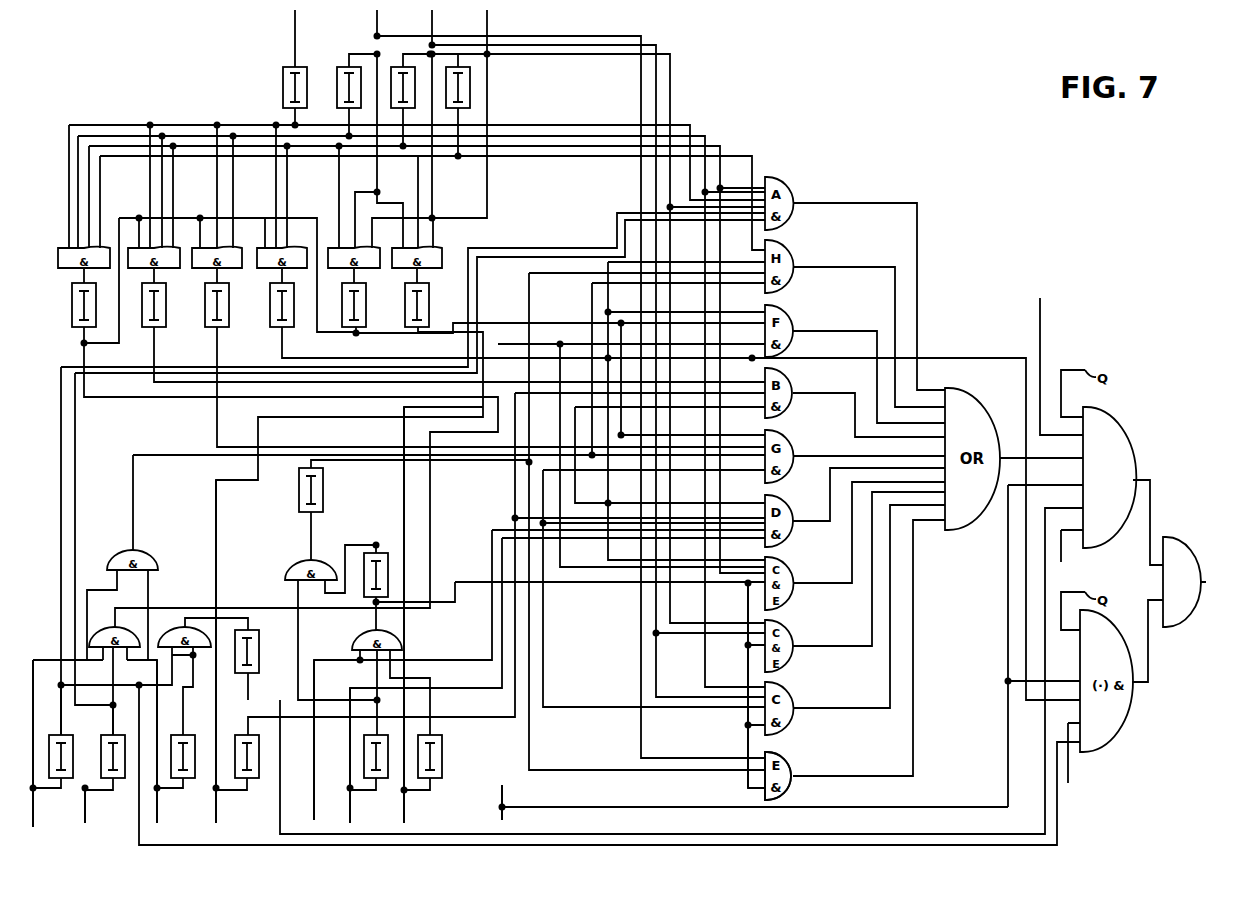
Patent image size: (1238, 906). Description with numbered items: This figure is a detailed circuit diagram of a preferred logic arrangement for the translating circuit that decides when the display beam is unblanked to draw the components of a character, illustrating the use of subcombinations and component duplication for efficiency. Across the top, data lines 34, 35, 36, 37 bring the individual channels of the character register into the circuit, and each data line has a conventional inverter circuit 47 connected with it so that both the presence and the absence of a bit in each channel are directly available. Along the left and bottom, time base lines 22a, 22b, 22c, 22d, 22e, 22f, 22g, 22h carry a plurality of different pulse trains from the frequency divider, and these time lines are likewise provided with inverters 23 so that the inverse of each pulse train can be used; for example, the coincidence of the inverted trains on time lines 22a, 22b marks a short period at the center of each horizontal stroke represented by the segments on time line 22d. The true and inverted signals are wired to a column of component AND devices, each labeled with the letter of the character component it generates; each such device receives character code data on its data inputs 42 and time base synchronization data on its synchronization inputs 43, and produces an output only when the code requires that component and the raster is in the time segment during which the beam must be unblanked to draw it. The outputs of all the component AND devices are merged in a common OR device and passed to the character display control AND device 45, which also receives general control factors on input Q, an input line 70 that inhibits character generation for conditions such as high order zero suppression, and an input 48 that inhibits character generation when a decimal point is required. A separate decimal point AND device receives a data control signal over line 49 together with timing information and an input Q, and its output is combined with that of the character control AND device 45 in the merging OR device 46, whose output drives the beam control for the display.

The time base line 22a is at (50, 748).
The time base line 22b is at (103, 812).
The time base line 22c is at (173, 748).
The time base line 22d is at (234, 658).
The time base line 22e is at (330, 746).
The time base line 22f is at (366, 760).
The time base line 22g is at (422, 620).
The time base line 22h is at (755, 801).
The inverter 23 is at (70, 716).
The data line 34 is at (487, 40).
The data line 35 is at (432, 30).
The data line 36 is at (377, 36).
The data line 37 is at (295, 40).
The data input 42 is at (560, 147).
The synchronization input 43 is at (555, 256).
The character display control AND device 45 is at (1116, 416).
The merging OR device 46 is at (1183, 554).
The inverter circuit 47 is at (283, 80).
The input 48 is at (1061, 560).
The line 49 is at (1068, 778).
The input line 70 is at (1040, 305).